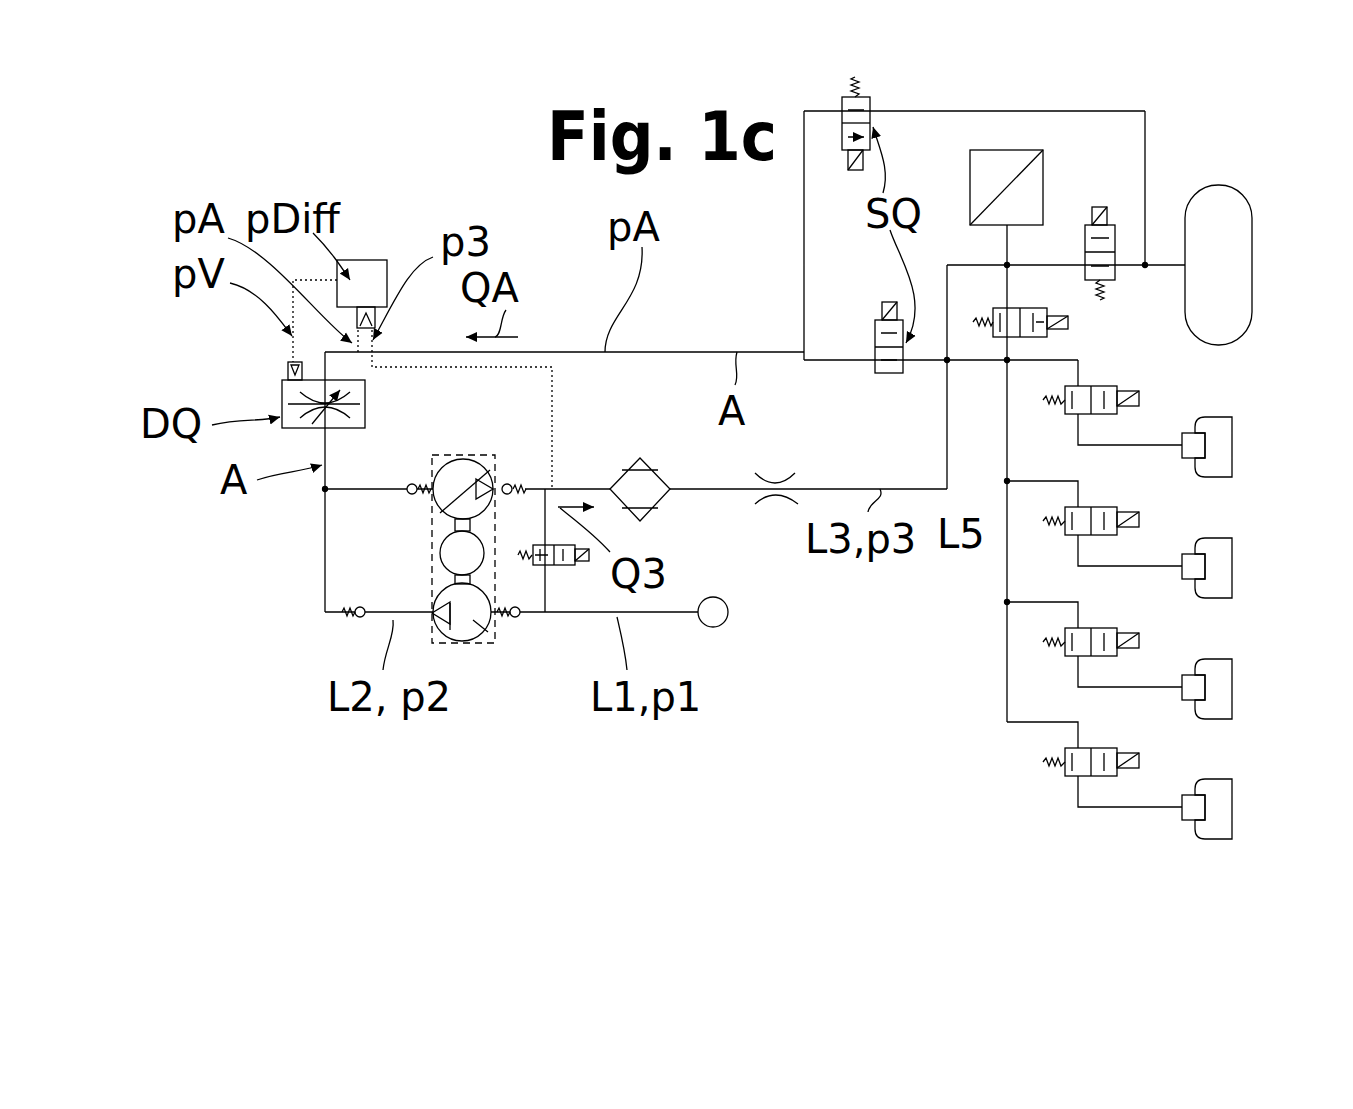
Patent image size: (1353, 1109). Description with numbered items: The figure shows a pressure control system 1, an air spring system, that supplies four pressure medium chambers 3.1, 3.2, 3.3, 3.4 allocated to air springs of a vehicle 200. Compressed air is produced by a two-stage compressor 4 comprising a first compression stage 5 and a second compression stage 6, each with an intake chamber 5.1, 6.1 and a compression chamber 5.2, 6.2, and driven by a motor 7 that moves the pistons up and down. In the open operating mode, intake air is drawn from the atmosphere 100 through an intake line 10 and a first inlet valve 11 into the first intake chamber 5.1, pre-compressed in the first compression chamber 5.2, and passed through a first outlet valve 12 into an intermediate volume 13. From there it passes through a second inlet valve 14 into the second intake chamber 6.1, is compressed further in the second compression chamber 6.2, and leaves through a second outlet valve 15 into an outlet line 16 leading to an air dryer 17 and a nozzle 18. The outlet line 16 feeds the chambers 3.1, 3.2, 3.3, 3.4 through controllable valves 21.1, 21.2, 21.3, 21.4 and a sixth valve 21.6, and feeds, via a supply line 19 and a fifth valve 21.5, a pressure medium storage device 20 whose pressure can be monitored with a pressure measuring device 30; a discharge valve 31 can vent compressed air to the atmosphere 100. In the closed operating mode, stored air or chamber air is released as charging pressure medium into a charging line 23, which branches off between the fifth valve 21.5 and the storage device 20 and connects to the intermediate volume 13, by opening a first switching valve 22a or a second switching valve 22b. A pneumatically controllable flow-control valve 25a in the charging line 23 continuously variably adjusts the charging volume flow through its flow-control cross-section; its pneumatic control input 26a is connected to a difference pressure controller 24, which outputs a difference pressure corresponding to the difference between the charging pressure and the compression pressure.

The pressure control system 1 is at (470, 200).
The vehicle 200 is at (844, 758).
The difference pressure controller 24 is at (387, 277).
The pneumatic control input 26a is at (289, 372).
The pneumatically controllable flow-control valve 25a is at (283, 406).
The second compression stage 6 is at (452, 460).
The two-stage compressor 4 is at (473, 453).
The motor 7 is at (440, 565).
The first compression stage 5 is at (472, 643).
The first intake chamber 5.1 is at (480, 623).
The first compression chamber 5.2 is at (460, 643).
The second intake chamber 6.1 is at (457, 498).
The second compression chamber 6.2 is at (498, 483).
The second inlet valve 14 is at (411, 481).
The second outlet valve 15 is at (503, 481).
The first outlet valve 12 is at (338, 615).
The intermediate volume 13 is at (321, 597).
The first inlet valve 11 is at (497, 637).
The discharge valve 31 is at (577, 567).
The atmosphere 100 is at (718, 607).
The intake line 10 is at (663, 615).
The air dryer 17 is at (660, 508).
The outlet line 16 is at (732, 488).
The nozzle 18 is at (762, 477).
The charging line 23 is at (780, 352).
The first switching valve 22a is at (867, 97).
The second switching valve 22b is at (877, 330).
The pressure measuring device 30 is at (1017, 150).
The supply line 19 is at (1048, 265).
The fifth valve 21.5 is at (1115, 220).
The pressure medium storage device 20 is at (1240, 328).
The sixth valve 21.6 is at (1050, 337).
The first valve 21.1 is at (1118, 383).
The second valve 21.2 is at (1118, 504).
The third valve 21.3 is at (1118, 625).
The fourth valve 21.4 is at (1118, 746).
The first pressure medium chamber 3.1 is at (1220, 445).
The second pressure medium chamber 3.2 is at (1220, 566).
The third pressure medium chamber 3.3 is at (1220, 687).
The fourth pressure medium chamber 3.4 is at (1220, 807).